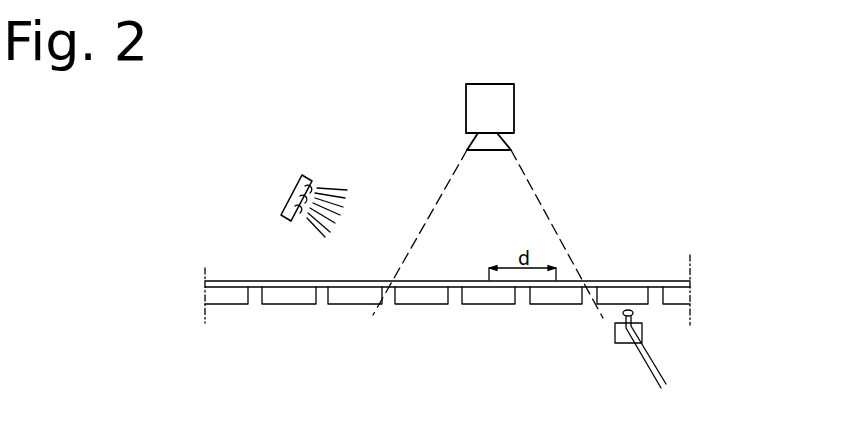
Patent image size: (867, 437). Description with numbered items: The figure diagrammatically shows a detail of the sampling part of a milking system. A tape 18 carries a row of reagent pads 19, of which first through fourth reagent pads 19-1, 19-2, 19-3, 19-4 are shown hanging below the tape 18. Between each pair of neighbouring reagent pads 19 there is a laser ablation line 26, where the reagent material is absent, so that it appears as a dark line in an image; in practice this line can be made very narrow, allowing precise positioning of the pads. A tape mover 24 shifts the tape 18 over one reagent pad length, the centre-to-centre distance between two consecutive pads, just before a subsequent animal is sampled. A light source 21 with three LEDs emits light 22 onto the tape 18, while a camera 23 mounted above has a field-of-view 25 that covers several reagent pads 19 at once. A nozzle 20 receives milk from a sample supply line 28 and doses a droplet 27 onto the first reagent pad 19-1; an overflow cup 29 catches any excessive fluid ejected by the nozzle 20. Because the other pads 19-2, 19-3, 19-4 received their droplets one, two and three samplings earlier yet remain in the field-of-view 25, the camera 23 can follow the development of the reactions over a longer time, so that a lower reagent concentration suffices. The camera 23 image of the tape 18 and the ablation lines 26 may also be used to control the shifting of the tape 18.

The tape 18 is at (234, 279).
The reagent pads 19 is at (296, 297).
The first reagent pad 19-1 is at (612, 298).
The second reagent pad 19-2 is at (560, 297).
The third reagent pad 19-3 is at (490, 297).
The fourth reagent pad 19-4 is at (410, 297).
The nozzle 20 is at (641, 331).
The light source 21 is at (281, 186).
The light 22 is at (346, 192).
The camera 23 is at (500, 105).
The tape mover 24 is at (314, 190).
The field-of-view 25 is at (506, 186).
The laser ablation line 26 is at (322, 293).
The droplet 27 is at (633, 313).
The sample supply line 28 is at (655, 376).
The overflow cup 29 is at (622, 341).